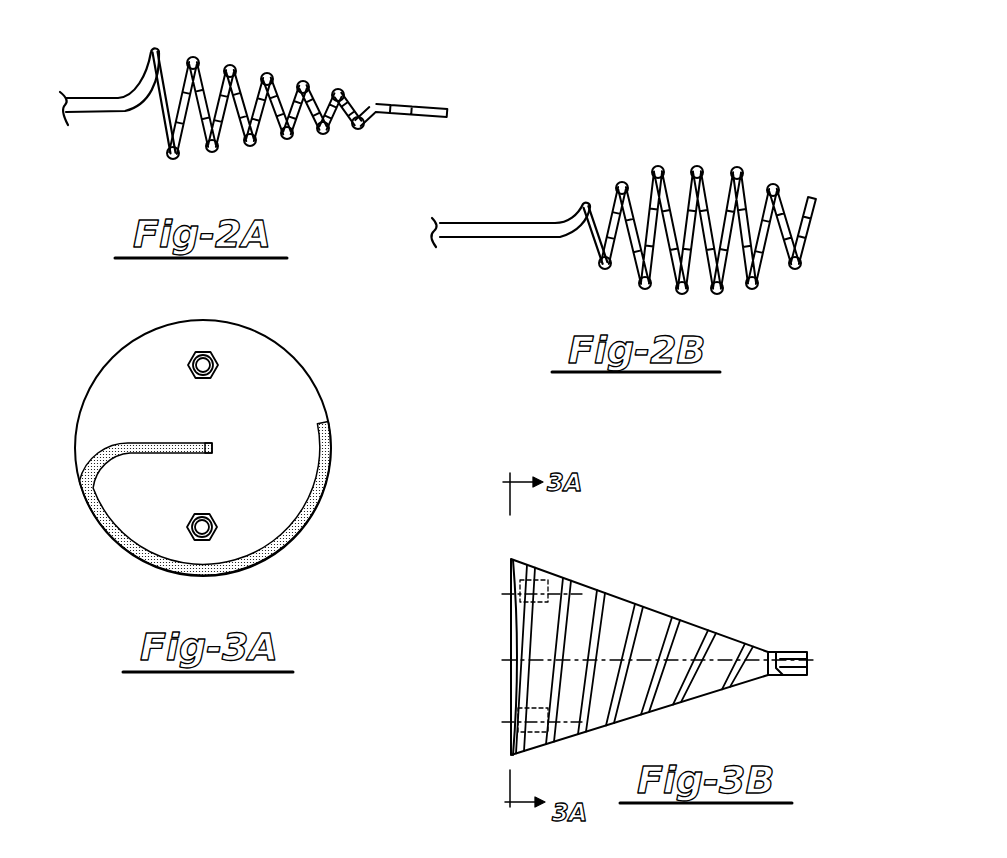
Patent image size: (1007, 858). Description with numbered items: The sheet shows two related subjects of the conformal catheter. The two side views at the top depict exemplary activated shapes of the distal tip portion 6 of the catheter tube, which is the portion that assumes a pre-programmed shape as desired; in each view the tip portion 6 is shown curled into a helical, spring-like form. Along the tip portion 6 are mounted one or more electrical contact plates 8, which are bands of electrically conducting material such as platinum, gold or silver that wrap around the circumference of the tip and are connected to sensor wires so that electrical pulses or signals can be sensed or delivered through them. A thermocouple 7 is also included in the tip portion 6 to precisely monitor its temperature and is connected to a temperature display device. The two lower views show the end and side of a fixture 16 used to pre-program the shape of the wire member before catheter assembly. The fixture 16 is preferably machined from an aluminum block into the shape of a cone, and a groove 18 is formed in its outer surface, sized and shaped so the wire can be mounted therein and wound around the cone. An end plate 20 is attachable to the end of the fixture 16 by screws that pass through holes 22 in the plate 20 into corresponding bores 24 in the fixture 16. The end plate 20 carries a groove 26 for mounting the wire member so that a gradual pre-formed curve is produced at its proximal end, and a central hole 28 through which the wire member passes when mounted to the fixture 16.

In FIG. 2A, the distal tip portion 6 is at (262, 63).
In FIG. 2B, the distal tip portion 6 is at (710, 167).
In FIG. 2A, the thermocouple 7 is at (442, 108).
In FIG. 2B, the thermocouple 7 is at (816, 205).
In FIG. 2A, the electrical contact plates 8 is at (383, 103).
In FIG. 2B, the electrical contact plates 8 is at (618, 186).
In FIG. 3A, the fixture 16 is at (199, 434).
In FIG. 3B, the fixture 16 is at (657, 662).
In FIG. 3B, the groove 18 is at (673, 620).
In FIG. 3A, the end plate 20 is at (286, 349).
In FIG. 3A, the holes 22 is at (218, 378).
In FIG. 3B, the bores 24 is at (542, 566).
In FIG. 3A, the groove 26 is at (133, 455).
In FIG. 3A, the central hole 28 is at (213, 448).